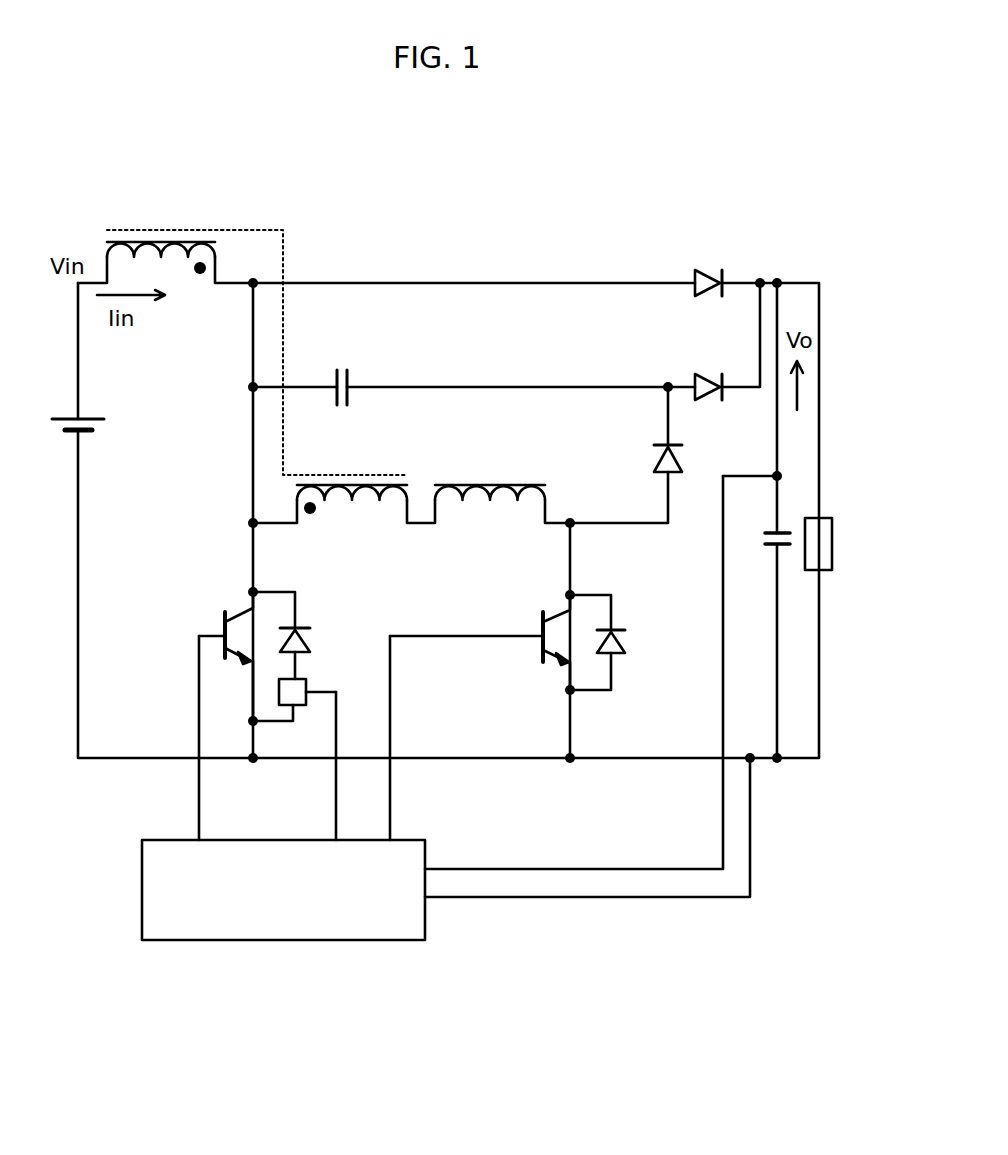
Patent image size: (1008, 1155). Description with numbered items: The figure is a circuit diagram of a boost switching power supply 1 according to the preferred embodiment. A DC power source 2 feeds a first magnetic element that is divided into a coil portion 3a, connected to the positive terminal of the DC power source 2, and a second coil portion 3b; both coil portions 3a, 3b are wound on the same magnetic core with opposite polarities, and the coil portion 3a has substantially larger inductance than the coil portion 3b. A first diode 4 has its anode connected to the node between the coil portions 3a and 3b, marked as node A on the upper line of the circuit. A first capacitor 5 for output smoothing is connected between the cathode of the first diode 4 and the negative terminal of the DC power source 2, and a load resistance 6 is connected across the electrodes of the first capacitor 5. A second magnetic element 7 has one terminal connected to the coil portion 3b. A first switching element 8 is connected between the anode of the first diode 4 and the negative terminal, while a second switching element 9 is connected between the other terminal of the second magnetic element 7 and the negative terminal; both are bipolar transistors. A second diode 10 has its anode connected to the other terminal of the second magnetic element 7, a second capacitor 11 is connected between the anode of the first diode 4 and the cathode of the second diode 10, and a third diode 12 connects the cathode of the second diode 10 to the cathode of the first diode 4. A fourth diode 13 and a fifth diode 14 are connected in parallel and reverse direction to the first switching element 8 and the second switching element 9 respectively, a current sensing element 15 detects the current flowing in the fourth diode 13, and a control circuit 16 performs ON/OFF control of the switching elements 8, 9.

The boost switching power supply 1 is at (626, 926).
The DC power source 2 is at (87, 419).
The coil portion 3a is at (170, 230).
The second coil portion 3b is at (335, 475).
The first diode 4 is at (712, 268).
The first capacitor 5 is at (769, 546).
The load resistance 6 is at (832, 543).
The second magnetic element 7 is at (478, 486).
The first switching element 8 is at (220, 628).
The second switching element 9 is at (540, 628).
The second diode 10 is at (678, 458).
The second capacitor 11 is at (350, 378).
The third diode 12 is at (703, 382).
The fourth diode 13 is at (300, 628).
The fifth diode 14 is at (615, 628).
The current sensing element 15 is at (300, 680).
The control circuit 16 is at (408, 840).
The node A is at (361, 278).